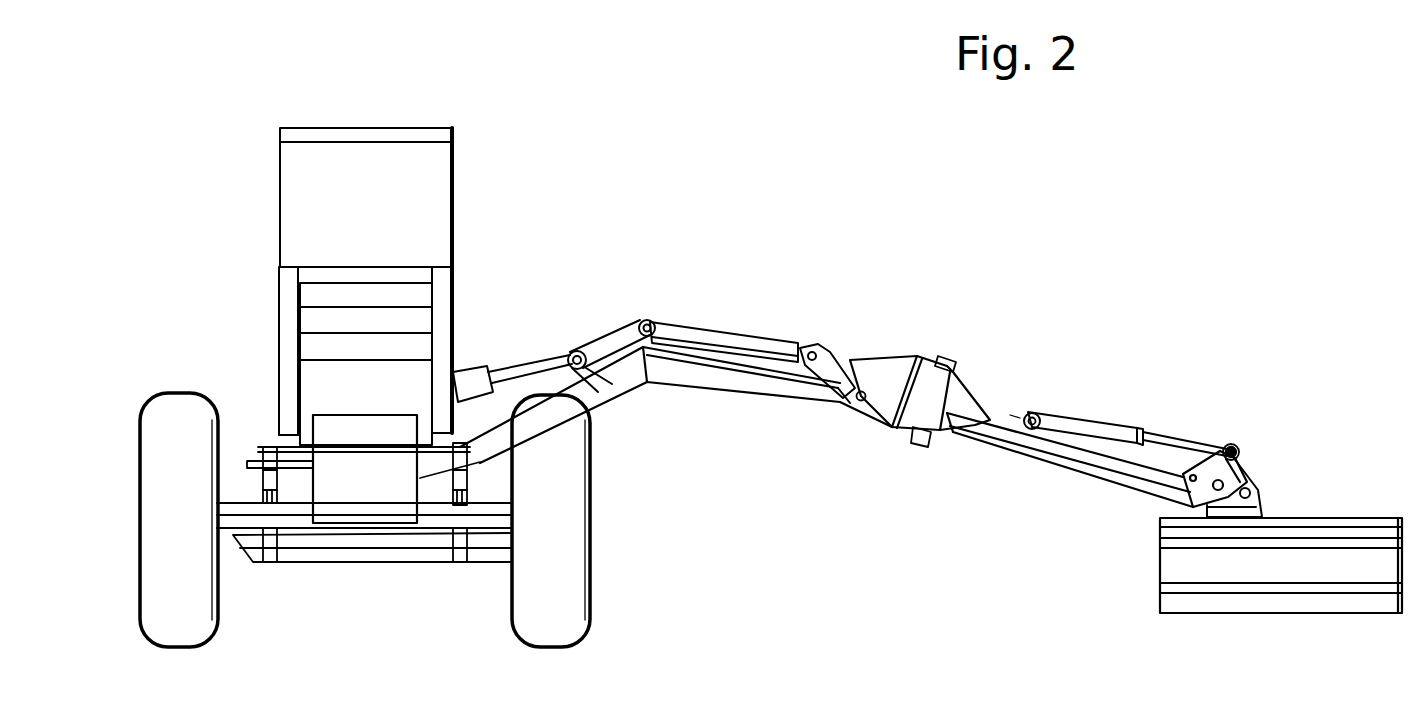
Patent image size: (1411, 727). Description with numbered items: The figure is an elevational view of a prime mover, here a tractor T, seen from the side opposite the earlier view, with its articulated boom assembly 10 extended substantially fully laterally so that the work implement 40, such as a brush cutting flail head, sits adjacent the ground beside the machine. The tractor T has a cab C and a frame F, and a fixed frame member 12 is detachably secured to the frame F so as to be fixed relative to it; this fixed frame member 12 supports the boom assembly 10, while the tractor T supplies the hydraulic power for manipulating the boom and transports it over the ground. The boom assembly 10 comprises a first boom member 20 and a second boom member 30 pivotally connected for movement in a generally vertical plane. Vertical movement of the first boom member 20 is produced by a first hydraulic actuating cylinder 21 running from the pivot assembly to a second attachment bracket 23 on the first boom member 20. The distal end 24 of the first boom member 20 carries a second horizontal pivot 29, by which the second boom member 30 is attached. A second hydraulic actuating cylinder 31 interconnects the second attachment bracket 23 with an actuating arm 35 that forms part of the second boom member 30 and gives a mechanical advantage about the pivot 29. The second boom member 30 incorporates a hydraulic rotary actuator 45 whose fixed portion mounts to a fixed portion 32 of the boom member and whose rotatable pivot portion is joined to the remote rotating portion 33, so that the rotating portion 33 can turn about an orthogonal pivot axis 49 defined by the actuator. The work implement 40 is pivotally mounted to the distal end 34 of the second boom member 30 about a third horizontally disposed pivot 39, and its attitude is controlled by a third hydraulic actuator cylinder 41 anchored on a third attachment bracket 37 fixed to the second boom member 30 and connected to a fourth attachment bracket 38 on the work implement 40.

The tractor T is at (232, 211).
The cab C is at (453, 192).
The frame F is at (278, 447).
The fixed frame member 12 is at (300, 478).
The articulated boom assembly 10 is at (1002, 238).
The first boom member 20 is at (713, 393).
The first hydraulic actuating cylinder 21 is at (467, 328).
The second attachment bracket 23 is at (568, 322).
The distal end of first boom member 24 is at (840, 403).
The second horizontal pivot 29 is at (860, 390).
The second boom member 30 is at (1000, 410).
The second hydraulic actuating cylinder 31 is at (698, 322).
The fixed portion of second boom member 32 is at (885, 355).
The rotating portion of second boom member 33 is at (1103, 480).
The distal end of second boom member 34 is at (1165, 505).
The actuating arm 35 is at (805, 348).
The third attachment bracket 37 is at (1013, 420).
The fourth attachment bracket 38 is at (1238, 452).
The third horizontally disposed pivot 39 is at (1247, 478).
The work implement 40 is at (1160, 605).
The third hydraulic actuator cylinder 41 is at (1100, 424).
The hydraulic rotary actuator 45 is at (972, 350).
The orthogonal pivot axis 49 is at (920, 450).